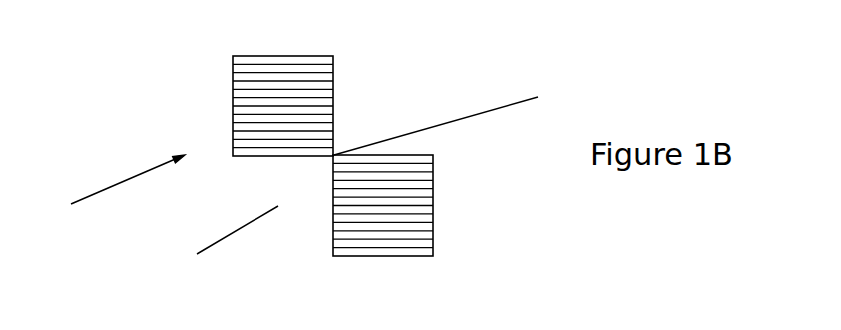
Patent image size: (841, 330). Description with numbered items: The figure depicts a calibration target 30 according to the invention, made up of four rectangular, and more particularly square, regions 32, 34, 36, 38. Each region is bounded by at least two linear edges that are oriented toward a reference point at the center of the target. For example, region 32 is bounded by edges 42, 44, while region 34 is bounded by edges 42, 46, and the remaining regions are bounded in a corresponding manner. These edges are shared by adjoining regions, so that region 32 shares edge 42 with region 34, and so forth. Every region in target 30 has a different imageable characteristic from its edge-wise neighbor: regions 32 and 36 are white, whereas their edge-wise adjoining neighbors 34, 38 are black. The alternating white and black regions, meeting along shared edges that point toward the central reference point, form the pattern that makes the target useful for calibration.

The calibration target 30 is at (113, 187).
The region 32 is at (227, 242).
The region 34 is at (232, 88).
The region 36 is at (404, 97).
The region 38 is at (434, 223).
The edge 42 is at (267, 155).
The edge 44 is at (333, 215).
The edge 46 is at (334, 105).